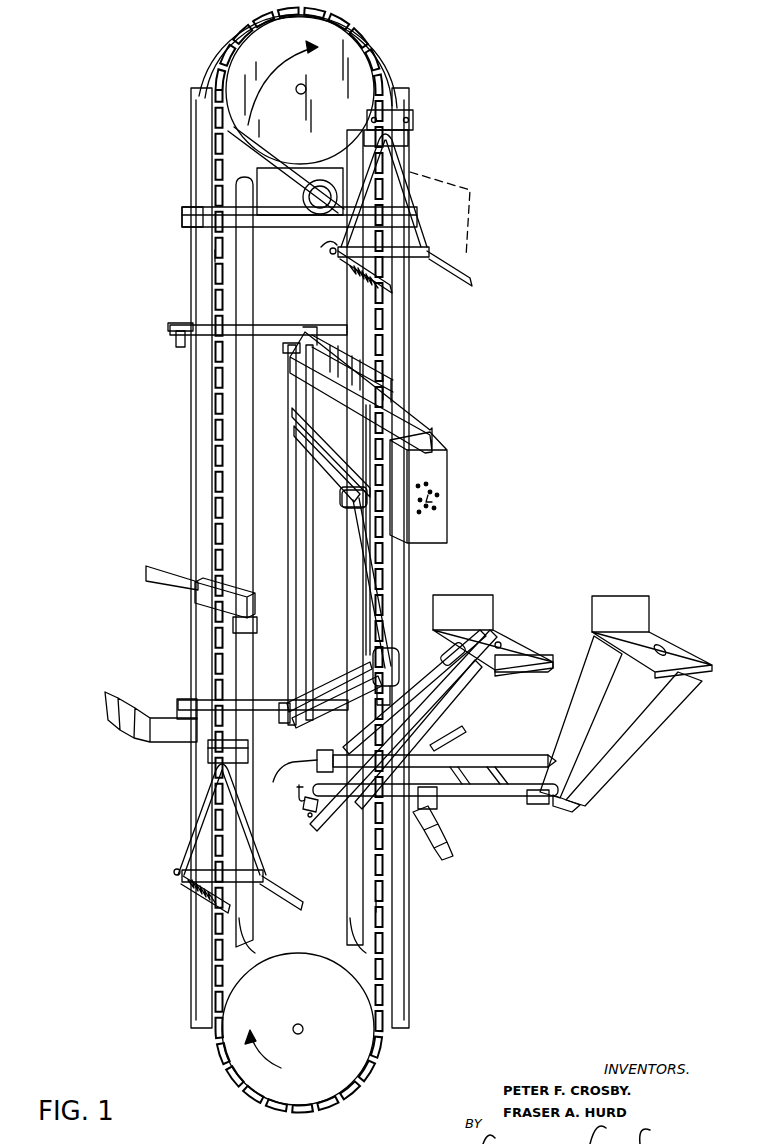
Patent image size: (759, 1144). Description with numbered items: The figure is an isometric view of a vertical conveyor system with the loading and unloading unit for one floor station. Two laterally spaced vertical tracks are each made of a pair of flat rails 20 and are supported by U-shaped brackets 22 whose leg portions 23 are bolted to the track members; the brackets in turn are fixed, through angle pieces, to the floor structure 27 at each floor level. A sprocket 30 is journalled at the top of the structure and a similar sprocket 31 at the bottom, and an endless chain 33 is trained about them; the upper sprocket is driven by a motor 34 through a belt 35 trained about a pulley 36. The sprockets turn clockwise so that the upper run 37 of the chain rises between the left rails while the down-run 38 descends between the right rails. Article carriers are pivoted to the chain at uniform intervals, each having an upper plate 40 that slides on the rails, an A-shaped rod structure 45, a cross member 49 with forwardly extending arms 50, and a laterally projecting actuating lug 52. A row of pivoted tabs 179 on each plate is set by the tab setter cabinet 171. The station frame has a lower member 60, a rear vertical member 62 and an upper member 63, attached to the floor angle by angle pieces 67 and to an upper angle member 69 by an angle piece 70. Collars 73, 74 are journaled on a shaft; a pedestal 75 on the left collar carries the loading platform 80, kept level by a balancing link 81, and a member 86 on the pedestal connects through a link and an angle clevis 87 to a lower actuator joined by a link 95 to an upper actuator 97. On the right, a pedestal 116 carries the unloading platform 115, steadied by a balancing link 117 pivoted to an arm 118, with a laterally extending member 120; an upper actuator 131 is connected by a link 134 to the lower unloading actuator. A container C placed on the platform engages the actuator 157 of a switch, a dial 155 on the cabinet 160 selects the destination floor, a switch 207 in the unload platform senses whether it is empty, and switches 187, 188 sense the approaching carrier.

The rails 20 is at (247, 210).
The U-shaped brackets 22 is at (267, 707).
The leg portions 23 is at (183, 352).
The floor structure 27 is at (437, 828).
The sprocket 30 is at (300, 87).
The sprocket 31 is at (308, 1010).
The endless chain 33 is at (215, 256).
The motor 34 is at (279, 206).
The belt 35 is at (205, 74).
The pulley 36 is at (225, 33).
The upper run 37 is at (215, 282).
The down-run 38 is at (376, 907).
The upper plate 40 is at (207, 760).
The A-shaped rod structure 45 is at (413, 227).
The cross member 49 is at (403, 257).
The arms 50 is at (455, 283).
The actuating lug 52 is at (329, 251).
The lower member 60 is at (310, 727).
The rear vertical member 62 is at (300, 610).
The upper member 63 is at (407, 427).
The angle pieces 67 is at (287, 717).
The upper angle member 69 is at (273, 327).
The angle piece 70 is at (290, 352).
The collar 73 is at (363, 787).
The collar 74 is at (483, 788).
The pedestal 75 is at (433, 680).
The loading platform 80 is at (520, 652).
The balancing link 81 is at (433, 700).
The member 86 is at (445, 742).
The angle clevis 87 is at (313, 805).
The link 95 is at (364, 574).
The actuator 97 is at (313, 435).
The unloading platform 115 is at (685, 653).
The pedestal 116 is at (572, 725).
The balancing link 117 is at (613, 752).
The arm 118 is at (540, 797).
The laterally extending member 120 is at (507, 757).
The actuator 131 is at (320, 473).
The link 134 is at (383, 603).
The dial 155 is at (432, 500).
The actuator 157 is at (500, 647).
The cabinet 160 is at (433, 470).
The tab setter cabinet 171 is at (197, 603).
The tabs 179 is at (353, 276).
The switch 187 is at (300, 793).
The switch 188 is at (317, 760).
The switch 207 is at (667, 650).
The container C is at (468, 258).